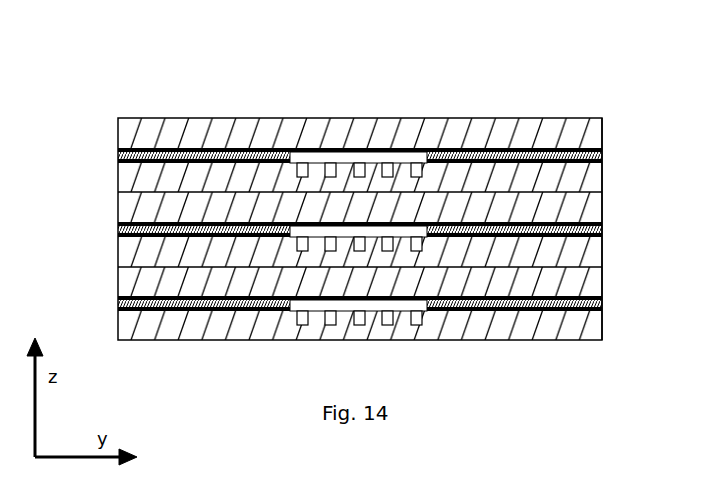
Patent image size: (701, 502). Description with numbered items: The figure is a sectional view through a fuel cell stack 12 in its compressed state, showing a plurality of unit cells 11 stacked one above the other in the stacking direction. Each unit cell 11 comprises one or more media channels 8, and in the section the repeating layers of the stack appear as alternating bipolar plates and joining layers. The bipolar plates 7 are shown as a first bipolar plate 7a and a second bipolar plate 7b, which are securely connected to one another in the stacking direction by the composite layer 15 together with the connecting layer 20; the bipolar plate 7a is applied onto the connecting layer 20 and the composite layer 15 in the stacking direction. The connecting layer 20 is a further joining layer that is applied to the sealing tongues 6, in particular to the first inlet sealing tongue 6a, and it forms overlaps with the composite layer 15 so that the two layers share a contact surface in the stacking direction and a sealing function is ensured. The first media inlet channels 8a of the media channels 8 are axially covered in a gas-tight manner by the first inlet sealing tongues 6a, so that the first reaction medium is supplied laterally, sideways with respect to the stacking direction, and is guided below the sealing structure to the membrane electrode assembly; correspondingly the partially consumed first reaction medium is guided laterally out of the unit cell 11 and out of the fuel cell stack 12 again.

The semiconductor chip 6 is at (308, 302).
The first inlet sealing tongue 6a is at (359, 244).
The insulating layer 7 is at (360, 229).
The first bipolar plate 7a is at (584, 330).
The second bipolar plate 7b is at (247, 283).
The media channel 8 is at (415, 302).
The first media inlet channel 8a is at (360, 229).
The unit cell 11 is at (100, 153).
The fuel cell stack 12 is at (537, 97).
The composite layer 15 is at (602, 295).
The connecting layer 20 is at (358, 302).